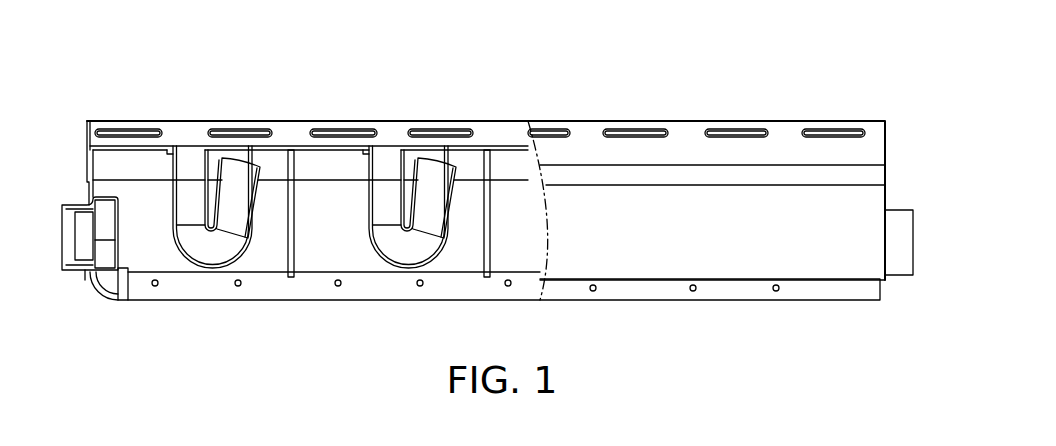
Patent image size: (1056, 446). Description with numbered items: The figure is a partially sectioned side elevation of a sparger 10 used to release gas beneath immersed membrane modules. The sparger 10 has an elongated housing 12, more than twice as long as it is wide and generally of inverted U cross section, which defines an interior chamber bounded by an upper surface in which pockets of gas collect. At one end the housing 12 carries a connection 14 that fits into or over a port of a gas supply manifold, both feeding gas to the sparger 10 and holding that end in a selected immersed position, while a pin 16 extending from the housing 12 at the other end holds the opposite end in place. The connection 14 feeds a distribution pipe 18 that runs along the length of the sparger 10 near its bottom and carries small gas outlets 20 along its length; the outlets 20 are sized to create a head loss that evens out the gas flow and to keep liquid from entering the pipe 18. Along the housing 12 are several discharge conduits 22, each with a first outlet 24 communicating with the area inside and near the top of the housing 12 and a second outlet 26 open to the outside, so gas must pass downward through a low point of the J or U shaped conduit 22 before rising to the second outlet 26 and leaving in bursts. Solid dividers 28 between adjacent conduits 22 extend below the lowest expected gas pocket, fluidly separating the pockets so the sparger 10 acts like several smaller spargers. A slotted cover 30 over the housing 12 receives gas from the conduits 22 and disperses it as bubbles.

The sparger 10 is at (933, 88).
The housing 12 is at (873, 198).
The connection 14 is at (72, 272).
The pin 16 is at (914, 243).
The distribution pipe 18 is at (380, 298).
The gas outlets 20 is at (238, 287).
The discharge conduits 22 is at (177, 168).
The first outlet 24 is at (256, 166).
The second outlet 26 is at (176, 146).
The dividers 28 is at (295, 170).
The cover 30 is at (788, 120).